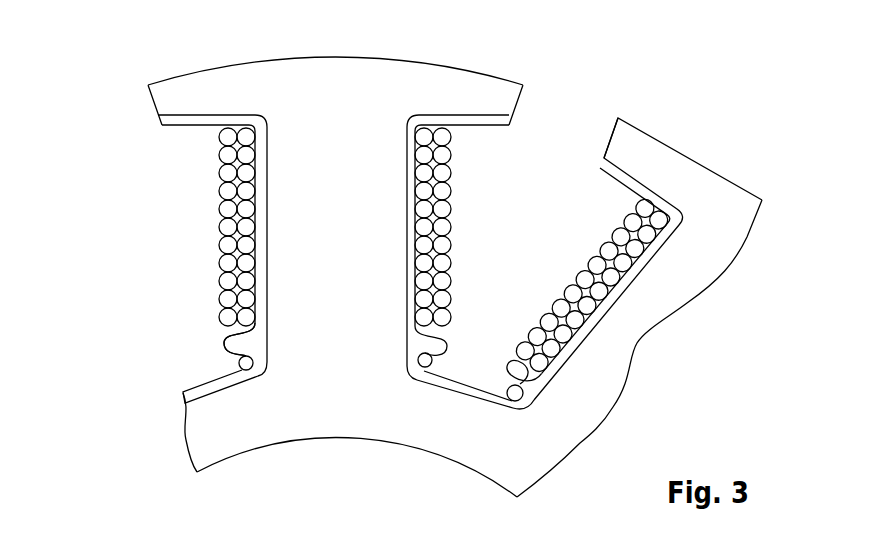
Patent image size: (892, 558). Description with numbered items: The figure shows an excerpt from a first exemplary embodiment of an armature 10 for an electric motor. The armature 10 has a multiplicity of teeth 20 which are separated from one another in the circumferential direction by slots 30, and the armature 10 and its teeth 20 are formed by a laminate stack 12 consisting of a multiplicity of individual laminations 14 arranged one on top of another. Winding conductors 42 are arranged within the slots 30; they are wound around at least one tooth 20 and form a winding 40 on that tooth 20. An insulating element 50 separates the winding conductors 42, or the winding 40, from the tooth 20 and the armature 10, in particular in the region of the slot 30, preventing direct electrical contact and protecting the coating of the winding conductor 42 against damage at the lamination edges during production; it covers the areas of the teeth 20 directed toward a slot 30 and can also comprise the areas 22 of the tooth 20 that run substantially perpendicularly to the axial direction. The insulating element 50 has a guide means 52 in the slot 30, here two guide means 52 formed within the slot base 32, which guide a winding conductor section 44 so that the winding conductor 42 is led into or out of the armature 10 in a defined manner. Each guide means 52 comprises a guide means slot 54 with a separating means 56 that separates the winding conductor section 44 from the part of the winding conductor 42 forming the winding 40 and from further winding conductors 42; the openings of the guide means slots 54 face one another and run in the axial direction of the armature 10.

The armature 10 is at (146, 231).
The laminate stack 12 is at (648, 133).
The individual lamination 14 is at (748, 170).
The tooth 20 is at (335, 72).
The area of the tooth 22 is at (349, 213).
The slot 30 is at (518, 234).
The slot base 32 is at (201, 362).
The winding 40 is at (403, 245).
The winding conductor 42 is at (248, 209).
The winding conductor section 44 is at (248, 356).
The insulating element 50 is at (263, 181).
The guide means 52 is at (248, 398).
The guide means slot 54 is at (252, 362).
The separating means 56 is at (534, 384).